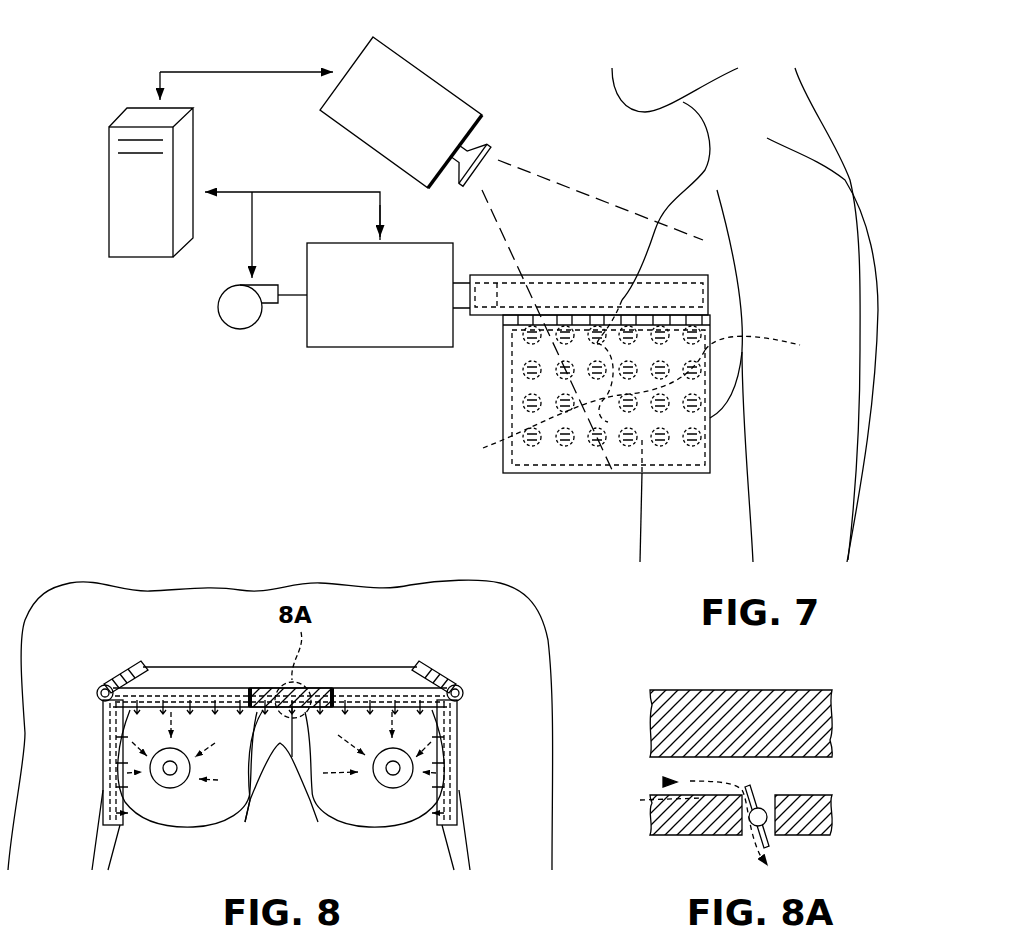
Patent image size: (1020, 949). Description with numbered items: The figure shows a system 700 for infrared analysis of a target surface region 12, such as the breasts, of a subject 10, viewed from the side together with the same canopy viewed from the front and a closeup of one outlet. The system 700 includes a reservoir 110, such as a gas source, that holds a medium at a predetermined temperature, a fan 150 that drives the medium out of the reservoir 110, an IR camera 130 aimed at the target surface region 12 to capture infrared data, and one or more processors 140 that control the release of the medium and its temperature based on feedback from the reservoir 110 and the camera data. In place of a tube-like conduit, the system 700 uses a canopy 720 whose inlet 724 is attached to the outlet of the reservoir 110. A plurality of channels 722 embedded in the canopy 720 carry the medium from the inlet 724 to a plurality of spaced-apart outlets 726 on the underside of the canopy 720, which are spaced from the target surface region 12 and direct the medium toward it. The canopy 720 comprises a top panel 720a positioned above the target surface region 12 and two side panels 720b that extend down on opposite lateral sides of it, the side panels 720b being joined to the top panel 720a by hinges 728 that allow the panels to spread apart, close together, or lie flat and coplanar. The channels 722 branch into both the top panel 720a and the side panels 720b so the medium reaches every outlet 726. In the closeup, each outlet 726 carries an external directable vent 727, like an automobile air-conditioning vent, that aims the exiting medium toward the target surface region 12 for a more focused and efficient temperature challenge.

In FIG. 7, the system for infrared analysis 700 is at (537, 68).
In FIG. 7, the IR camera 130 is at (426, 70).
In FIG. 7, the processor 140 is at (140, 258).
In FIG. 7, the fan 150 is at (243, 330).
In FIG. 7, the reservoir 110 is at (353, 350).
In FIG. 7, the inlet 724 is at (470, 315).
In FIG. 7, the channels 722 is at (577, 295).
In FIG. 8, the channels 722 is at (207, 695).
In FIG. 8A, the channels 722 is at (830, 765).
In FIG. 7, the canopy 720 is at (503, 395).
In FIG. 8, the canopy 720 is at (520, 613).
In FIG. 8, the top panel 720a is at (398, 673).
In FIG. 8, the side panels 720b is at (470, 740).
In FIG. 7, the outlets 726 is at (556, 406).
In FIG. 8, the outlets 726 is at (277, 795).
In FIG. 8A, the outlets 726 is at (776, 784).
In FIG. 8, the directable vent 727 is at (252, 793).
In FIG. 8A, the directable vent 727 is at (770, 843).
In FIG. 8, the hinges 728 is at (117, 668).
In FIG. 7, the subject 10 is at (810, 172).
In FIG. 8, the subject 10 is at (394, 598).
In FIG. 7, the target surface region 12 is at (800, 345).
In FIG. 8, the target surface region 12 is at (372, 802).